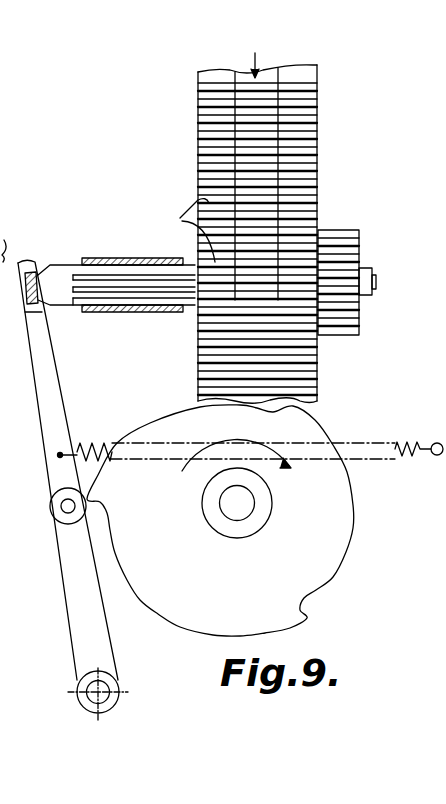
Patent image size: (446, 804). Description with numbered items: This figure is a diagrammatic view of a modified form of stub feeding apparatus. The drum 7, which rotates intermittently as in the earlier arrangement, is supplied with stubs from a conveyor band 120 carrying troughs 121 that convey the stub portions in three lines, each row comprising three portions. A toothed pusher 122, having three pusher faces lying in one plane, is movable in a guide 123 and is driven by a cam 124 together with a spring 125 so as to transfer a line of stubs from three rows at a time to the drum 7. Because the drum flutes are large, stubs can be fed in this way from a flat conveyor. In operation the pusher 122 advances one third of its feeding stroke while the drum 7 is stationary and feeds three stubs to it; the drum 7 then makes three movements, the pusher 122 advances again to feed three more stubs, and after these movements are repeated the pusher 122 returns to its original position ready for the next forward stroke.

The conveyor band 120 is at (318, 67).
The drum 7 is at (360, 253).
The troughs 121 is at (186, 230).
The toothed pusher 122 is at (61, 265).
The guide 123 is at (106, 258).
The cam 124 is at (222, 603).
The spring 125 is at (405, 458).